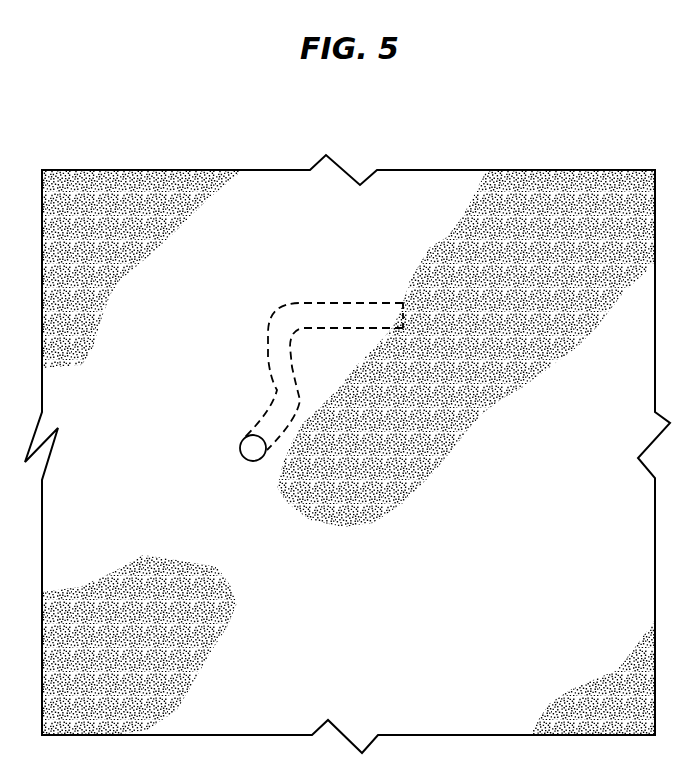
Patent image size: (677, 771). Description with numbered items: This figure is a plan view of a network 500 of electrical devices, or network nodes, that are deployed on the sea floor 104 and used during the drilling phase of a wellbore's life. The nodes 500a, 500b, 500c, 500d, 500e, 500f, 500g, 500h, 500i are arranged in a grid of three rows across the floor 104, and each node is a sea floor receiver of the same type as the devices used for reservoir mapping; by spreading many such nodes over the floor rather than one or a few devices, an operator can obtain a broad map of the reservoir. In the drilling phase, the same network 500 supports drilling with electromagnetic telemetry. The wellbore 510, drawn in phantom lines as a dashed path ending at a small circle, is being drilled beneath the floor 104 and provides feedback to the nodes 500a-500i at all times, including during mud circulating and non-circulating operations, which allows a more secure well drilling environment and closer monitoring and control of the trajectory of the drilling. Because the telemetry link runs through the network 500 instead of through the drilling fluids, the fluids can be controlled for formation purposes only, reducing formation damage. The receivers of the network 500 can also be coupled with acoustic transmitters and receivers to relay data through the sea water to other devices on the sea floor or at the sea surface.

The network 500 is at (427, 200).
The network node 500a is at (181, 281).
The network node 500b is at (374, 281).
The network node 500c is at (571, 281).
The network node 500d is at (181, 467).
The network node 500e is at (376, 467).
The network node 500f is at (571, 466).
The network node 500g is at (181, 652).
The network node 500h is at (376, 651).
The network node 500i is at (573, 651).
The floor 104 is at (404, 394).
The wellbore 510 is at (263, 413).